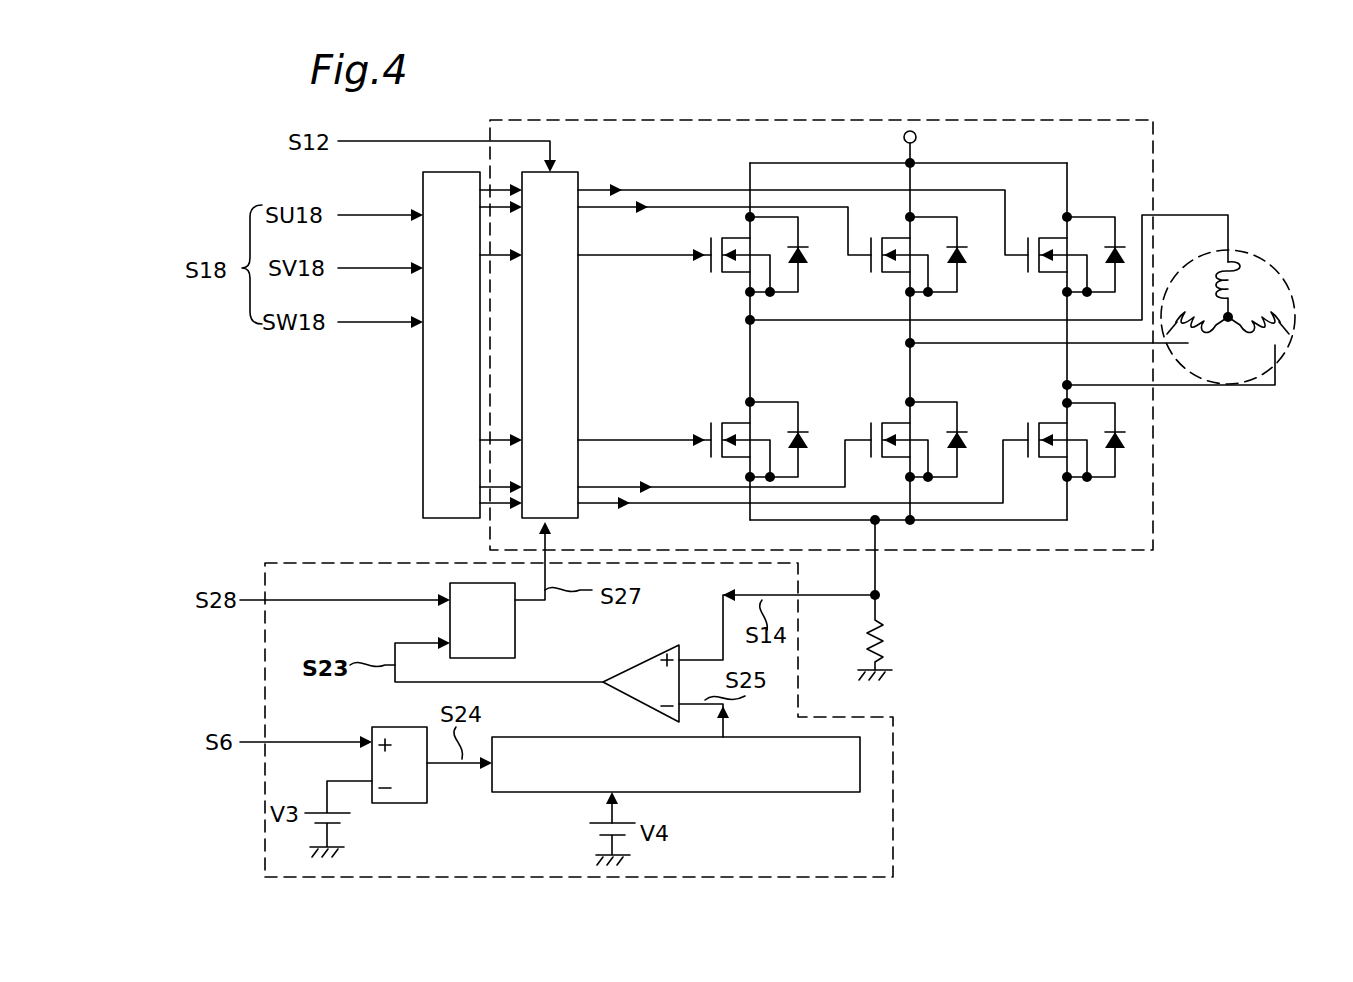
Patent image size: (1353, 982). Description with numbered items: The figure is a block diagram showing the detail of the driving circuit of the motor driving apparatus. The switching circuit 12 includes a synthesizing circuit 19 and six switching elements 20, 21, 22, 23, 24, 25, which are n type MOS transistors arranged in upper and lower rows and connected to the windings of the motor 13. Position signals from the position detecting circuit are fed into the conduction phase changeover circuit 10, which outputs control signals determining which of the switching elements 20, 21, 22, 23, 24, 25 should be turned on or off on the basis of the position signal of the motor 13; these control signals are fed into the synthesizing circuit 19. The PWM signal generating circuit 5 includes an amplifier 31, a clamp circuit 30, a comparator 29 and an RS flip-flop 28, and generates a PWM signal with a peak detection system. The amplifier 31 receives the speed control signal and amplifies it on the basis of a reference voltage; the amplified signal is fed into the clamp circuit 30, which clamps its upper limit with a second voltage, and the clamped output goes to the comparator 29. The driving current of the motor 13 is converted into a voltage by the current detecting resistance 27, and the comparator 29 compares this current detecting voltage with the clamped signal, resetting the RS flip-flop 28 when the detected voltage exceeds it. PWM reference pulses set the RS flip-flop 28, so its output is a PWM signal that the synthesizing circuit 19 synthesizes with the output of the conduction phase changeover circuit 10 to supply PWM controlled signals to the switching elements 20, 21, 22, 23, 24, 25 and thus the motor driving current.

The PWM signal generating circuit 5 is at (893, 838).
The conduction phase changeover circuit 10 is at (423, 450).
The switching circuit 12 is at (1153, 455).
The motor 13 is at (1263, 265).
The synthesizing circuit 19 is at (580, 298).
The switching element 20 is at (785, 278).
The switching element 21 is at (950, 278).
The switching element 22 is at (1087, 228).
The switching element 23 is at (775, 413).
The switching element 24 is at (935, 413).
The switching element 25 is at (1098, 463).
The current detecting resistance 27 is at (885, 640).
The RS flip-flop 28 is at (515, 643).
The comparator 29 is at (630, 690).
The clamp circuit 30 is at (825, 795).
The amplifier 31 is at (410, 803).